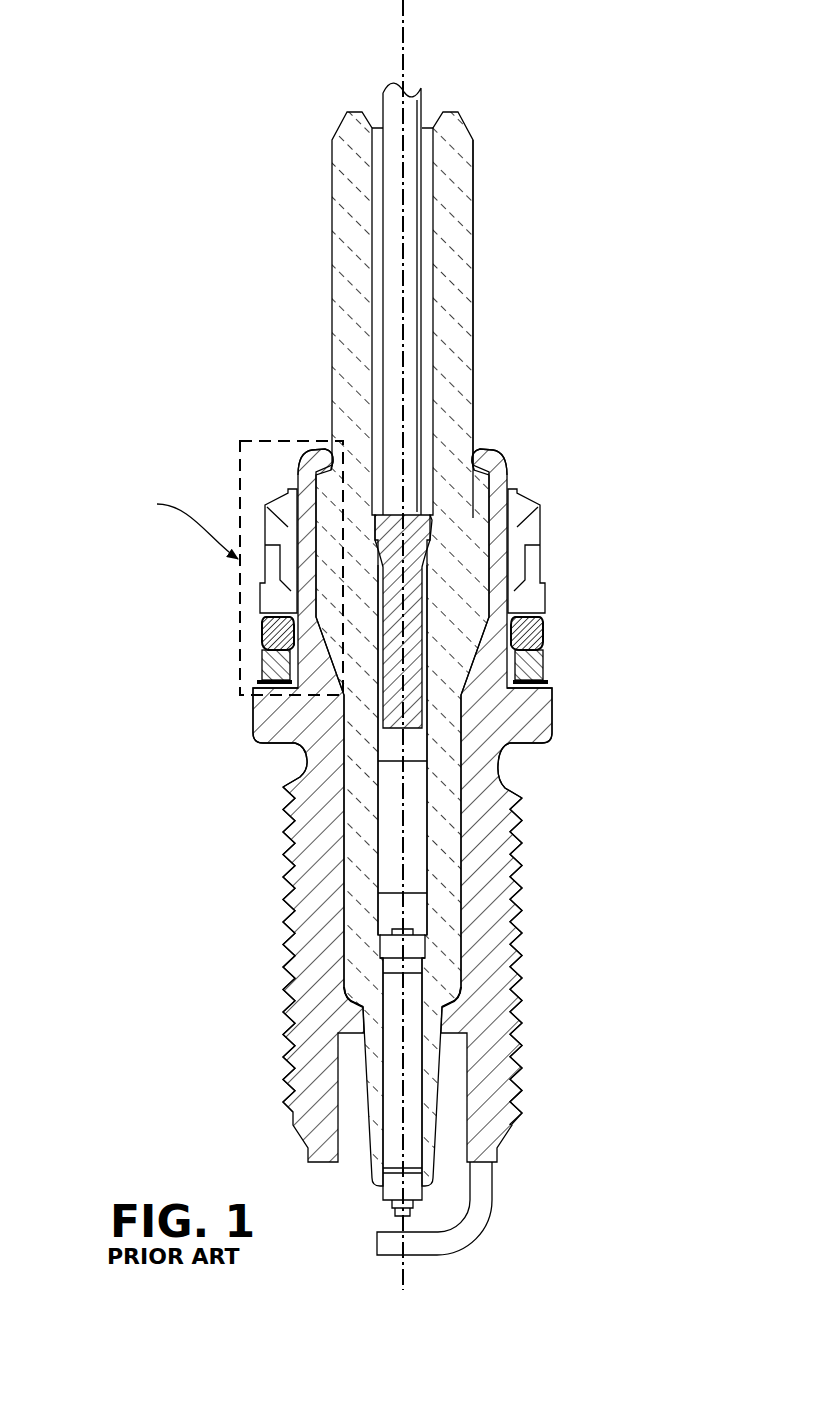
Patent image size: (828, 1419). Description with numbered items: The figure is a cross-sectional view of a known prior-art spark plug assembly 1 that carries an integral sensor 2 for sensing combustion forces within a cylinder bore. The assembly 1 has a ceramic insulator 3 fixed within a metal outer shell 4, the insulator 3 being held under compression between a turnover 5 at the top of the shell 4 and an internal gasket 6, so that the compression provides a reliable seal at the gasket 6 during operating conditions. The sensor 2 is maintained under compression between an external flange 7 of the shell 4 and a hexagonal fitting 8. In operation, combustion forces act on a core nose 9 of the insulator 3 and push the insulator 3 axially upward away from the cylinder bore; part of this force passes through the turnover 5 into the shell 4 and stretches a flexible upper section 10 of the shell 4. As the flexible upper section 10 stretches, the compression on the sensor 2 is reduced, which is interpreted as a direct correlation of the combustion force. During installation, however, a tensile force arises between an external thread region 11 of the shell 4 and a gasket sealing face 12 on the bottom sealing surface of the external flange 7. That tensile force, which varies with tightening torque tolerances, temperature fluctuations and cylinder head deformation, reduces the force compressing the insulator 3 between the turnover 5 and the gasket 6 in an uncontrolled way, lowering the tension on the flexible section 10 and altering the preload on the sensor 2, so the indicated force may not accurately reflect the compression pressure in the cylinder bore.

The spark plug assembly 1 is at (505, 156).
The sensor 2 is at (551, 680).
The ceramic insulator 3 is at (331, 301).
The metal outer shell 4 is at (280, 1024).
The turnover 5 is at (492, 451).
The internal gasket 6 is at (457, 1004).
The external flange 7 is at (555, 720).
The hexagonal fitting 8 is at (543, 559).
The core nose 9 is at (444, 1108).
The flexible upper section 10 is at (628, 482).
The external thread region 11 is at (524, 861).
The gasket sealing face 12 is at (527, 754).